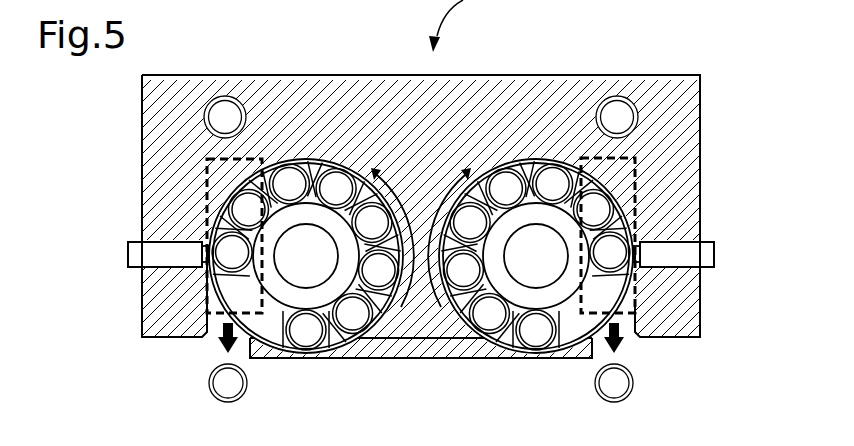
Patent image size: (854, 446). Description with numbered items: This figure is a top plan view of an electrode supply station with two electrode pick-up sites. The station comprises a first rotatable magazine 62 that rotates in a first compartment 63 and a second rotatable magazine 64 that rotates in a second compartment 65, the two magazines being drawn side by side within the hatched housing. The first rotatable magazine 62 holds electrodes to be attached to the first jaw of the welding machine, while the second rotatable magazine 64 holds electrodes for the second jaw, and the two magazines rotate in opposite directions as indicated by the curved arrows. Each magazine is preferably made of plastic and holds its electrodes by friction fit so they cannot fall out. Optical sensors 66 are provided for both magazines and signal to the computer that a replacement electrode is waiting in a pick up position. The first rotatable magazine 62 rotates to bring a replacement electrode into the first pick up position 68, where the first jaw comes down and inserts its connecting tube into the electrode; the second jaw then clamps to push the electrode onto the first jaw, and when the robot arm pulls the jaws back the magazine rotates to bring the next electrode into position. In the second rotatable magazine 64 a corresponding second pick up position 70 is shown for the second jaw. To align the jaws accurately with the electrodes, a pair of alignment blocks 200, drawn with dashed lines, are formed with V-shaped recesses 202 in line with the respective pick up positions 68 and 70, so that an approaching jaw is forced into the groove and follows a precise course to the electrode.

The first rotatable magazine 62 is at (315, 172).
The first compartment 63 is at (307, 160).
The second rotatable magazine 64 is at (527, 165).
The second compartment 65 is at (521, 163).
The optical sensors 66 is at (188, 255).
The first pick up position 68 is at (229, 255).
The second pick up position 70 is at (613, 255).
The alignment blocks 200 is at (206, 198).
The V-shaped recesses 202 is at (205, 277).